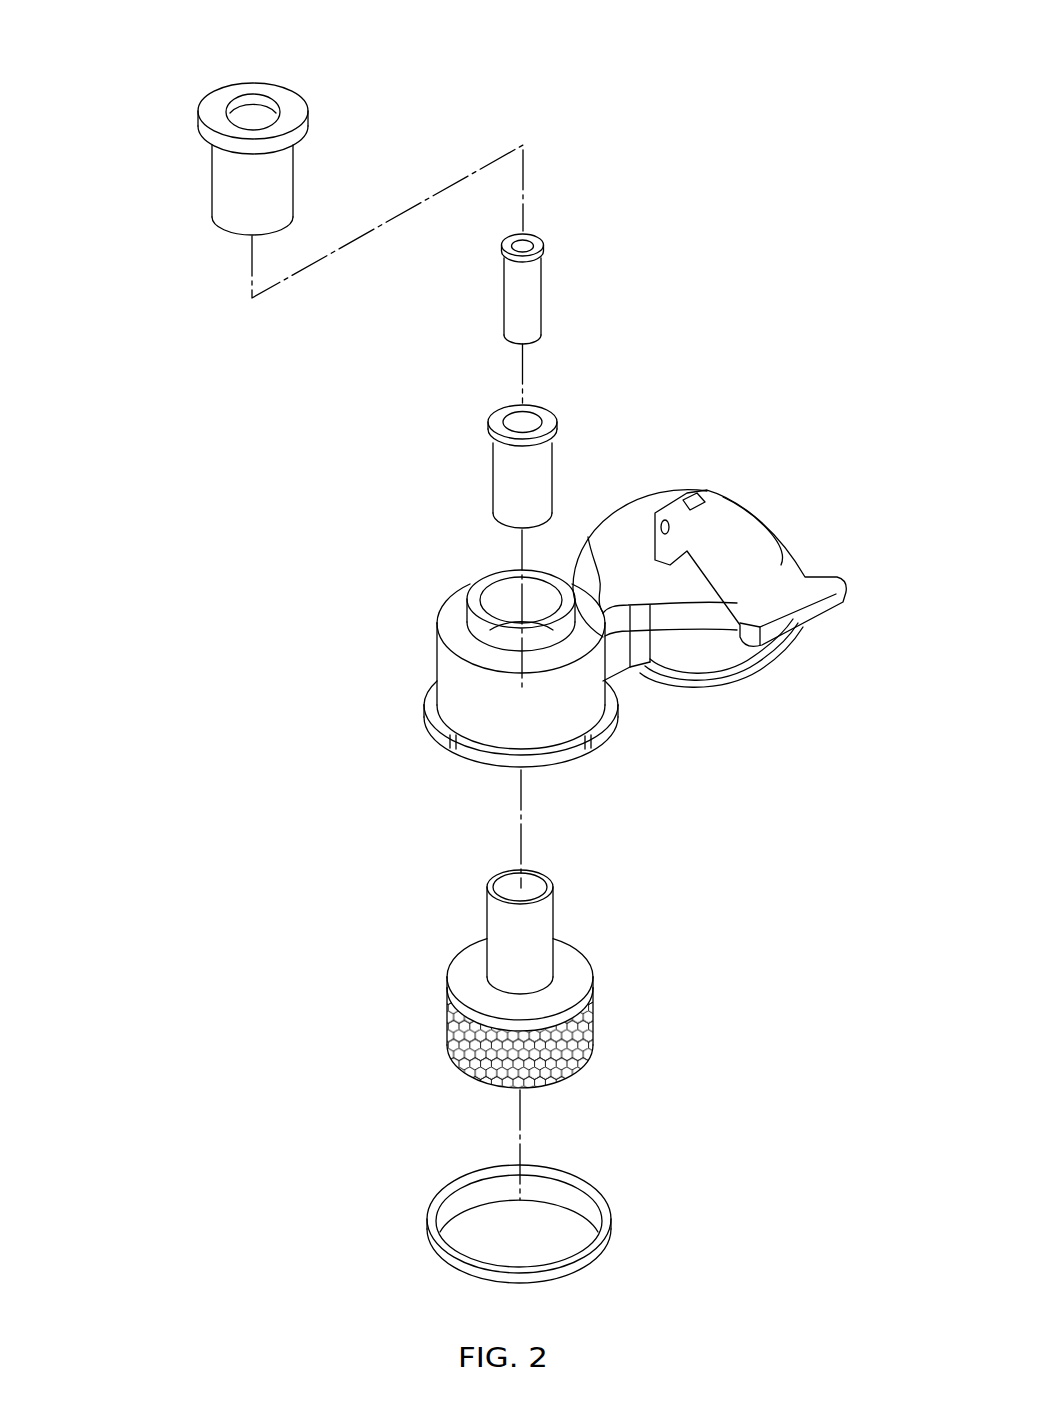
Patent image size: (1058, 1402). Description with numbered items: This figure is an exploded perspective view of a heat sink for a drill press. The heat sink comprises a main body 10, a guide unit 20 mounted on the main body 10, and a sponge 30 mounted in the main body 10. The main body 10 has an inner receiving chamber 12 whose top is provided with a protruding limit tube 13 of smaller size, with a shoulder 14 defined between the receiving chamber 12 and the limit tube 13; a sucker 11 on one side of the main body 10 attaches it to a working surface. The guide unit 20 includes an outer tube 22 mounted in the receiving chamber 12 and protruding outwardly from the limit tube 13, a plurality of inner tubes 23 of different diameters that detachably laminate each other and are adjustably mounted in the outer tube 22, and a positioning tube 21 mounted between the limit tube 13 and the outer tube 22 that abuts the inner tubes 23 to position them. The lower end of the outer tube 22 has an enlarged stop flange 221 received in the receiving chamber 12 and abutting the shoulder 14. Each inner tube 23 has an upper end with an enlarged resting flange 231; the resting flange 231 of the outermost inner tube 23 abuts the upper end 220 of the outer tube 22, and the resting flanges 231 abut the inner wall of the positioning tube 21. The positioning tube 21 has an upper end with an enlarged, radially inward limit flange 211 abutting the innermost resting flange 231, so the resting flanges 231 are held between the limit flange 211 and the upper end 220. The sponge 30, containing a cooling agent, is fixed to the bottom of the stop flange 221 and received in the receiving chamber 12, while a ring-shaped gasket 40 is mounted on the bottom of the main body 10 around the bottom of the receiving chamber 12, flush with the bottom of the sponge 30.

The main body 10 is at (574, 639).
The sucker 11 is at (730, 543).
The receiving chamber 12 is at (510, 612).
The limit tube 13 is at (482, 632).
The shoulder 14 is at (557, 658).
The guide unit 20 is at (630, 187).
The positioning tube 21 is at (241, 120).
The limit flange 211 is at (293, 108).
The outer tube 22 is at (525, 950).
The upper end of the outer tube 220 is at (552, 887).
The stop flange 221 is at (473, 978).
The inner tubes 23 is at (551, 380).
The resting flange 231 is at (545, 242).
The sponge 30 is at (606, 1029).
The gasket 40 is at (628, 1245).